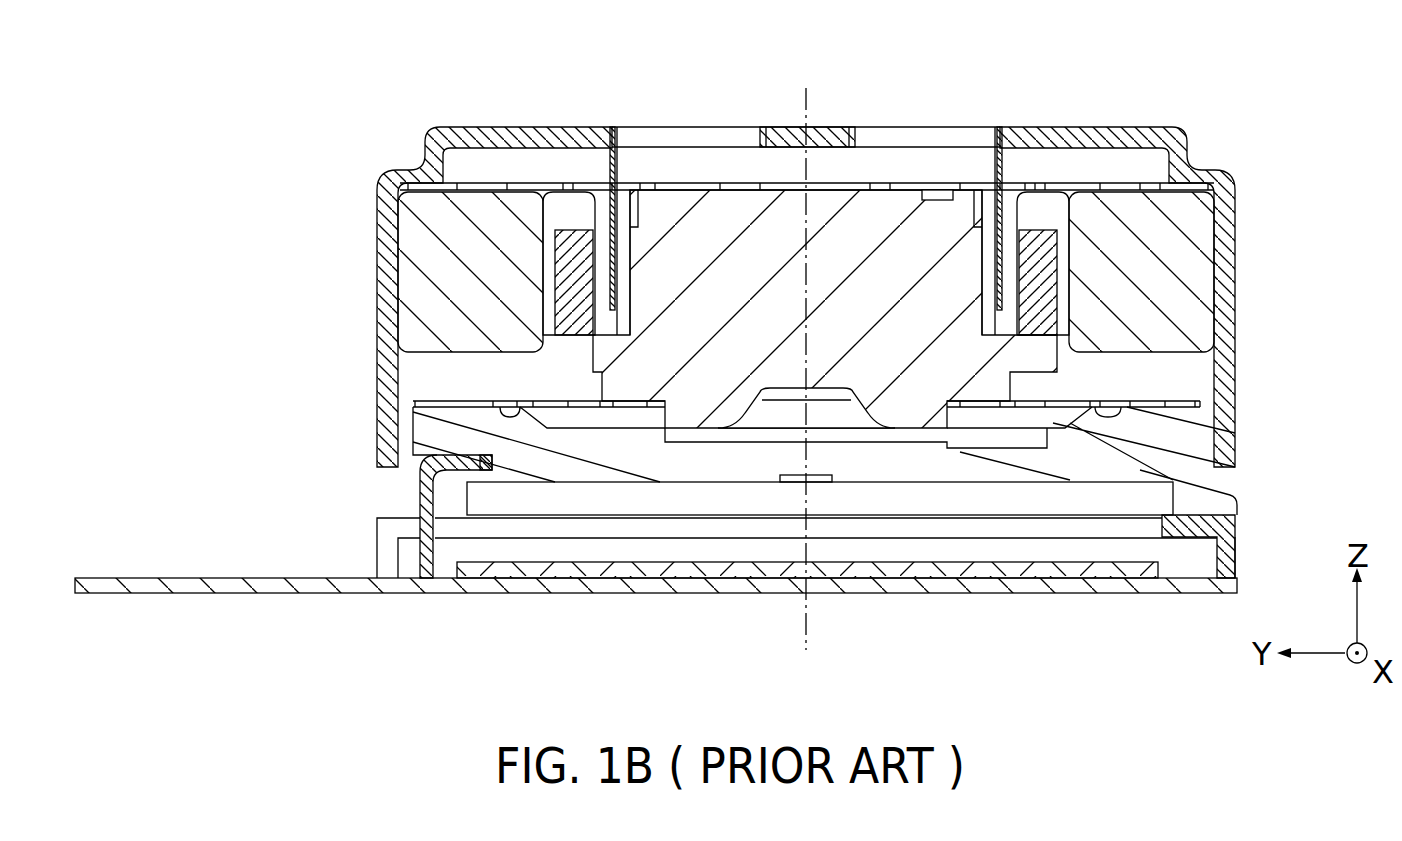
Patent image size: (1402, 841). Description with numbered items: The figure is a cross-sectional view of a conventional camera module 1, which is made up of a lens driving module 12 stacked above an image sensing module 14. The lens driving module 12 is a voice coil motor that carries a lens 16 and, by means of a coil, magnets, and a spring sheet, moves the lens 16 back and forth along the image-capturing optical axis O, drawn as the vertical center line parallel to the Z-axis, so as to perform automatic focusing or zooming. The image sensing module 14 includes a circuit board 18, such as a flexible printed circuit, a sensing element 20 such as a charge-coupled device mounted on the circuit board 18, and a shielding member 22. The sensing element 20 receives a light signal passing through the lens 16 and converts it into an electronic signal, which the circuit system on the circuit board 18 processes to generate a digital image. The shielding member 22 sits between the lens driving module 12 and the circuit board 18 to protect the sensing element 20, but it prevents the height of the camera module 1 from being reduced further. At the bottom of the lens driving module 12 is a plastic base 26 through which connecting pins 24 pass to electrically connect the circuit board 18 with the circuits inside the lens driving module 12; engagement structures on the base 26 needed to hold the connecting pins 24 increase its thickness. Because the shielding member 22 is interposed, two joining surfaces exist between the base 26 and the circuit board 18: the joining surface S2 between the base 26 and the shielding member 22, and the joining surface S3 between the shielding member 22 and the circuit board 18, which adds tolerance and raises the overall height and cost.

The conventional camera module 1 is at (228, 86).
The lens driving module 12 is at (370, 330).
The image sensing module 14 is at (370, 538).
The lens 16 is at (687, 228).
The circuit board 18 is at (220, 586).
The sensing element 20 is at (690, 568).
The shielding member 22 is at (1190, 530).
The connecting pins 24 is at (428, 563).
The base 26 is at (450, 497).
The joining surface S2 is at (1230, 488).
The joining surface S3 is at (1230, 563).
The image-capturing optical axis O is at (805, 350).